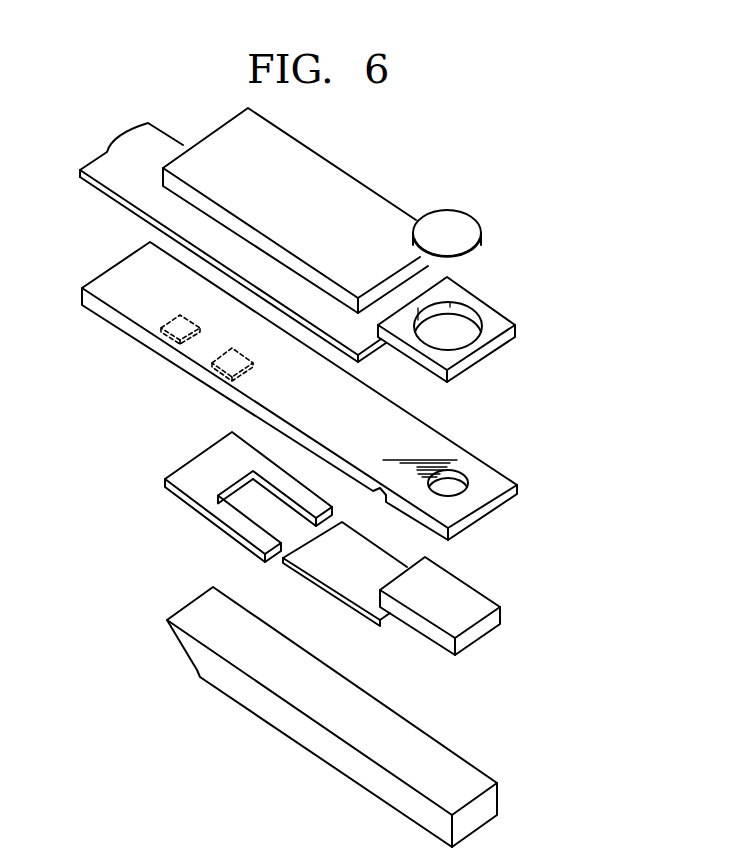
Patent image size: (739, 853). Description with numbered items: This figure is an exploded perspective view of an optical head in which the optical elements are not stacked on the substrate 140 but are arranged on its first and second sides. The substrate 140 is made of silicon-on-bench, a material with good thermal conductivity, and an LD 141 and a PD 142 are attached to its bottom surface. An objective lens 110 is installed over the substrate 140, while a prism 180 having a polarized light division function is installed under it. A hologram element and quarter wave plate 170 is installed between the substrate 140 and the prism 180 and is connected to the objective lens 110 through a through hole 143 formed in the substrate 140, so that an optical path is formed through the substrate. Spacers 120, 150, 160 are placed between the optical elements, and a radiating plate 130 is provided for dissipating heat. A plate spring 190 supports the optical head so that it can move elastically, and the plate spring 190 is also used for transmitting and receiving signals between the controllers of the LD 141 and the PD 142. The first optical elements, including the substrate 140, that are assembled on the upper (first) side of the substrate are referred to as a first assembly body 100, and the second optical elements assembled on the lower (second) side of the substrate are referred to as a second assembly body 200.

The first assembly body 100 is at (572, 215).
The objective lens 110 is at (468, 237).
The spacer 120 is at (497, 326).
The radiating plate 130 is at (343, 203).
The substrate 140 is at (493, 480).
The LD 141 is at (216, 365).
The PD 142 is at (168, 329).
The through hole 143 is at (450, 481).
The spacer 150 is at (198, 477).
The spacer 160 is at (342, 578).
The hologram element and quarter wave plate 170 is at (458, 615).
The prism 180 is at (455, 778).
The plate spring 190 is at (122, 177).
The second assembly body 200 is at (575, 600).